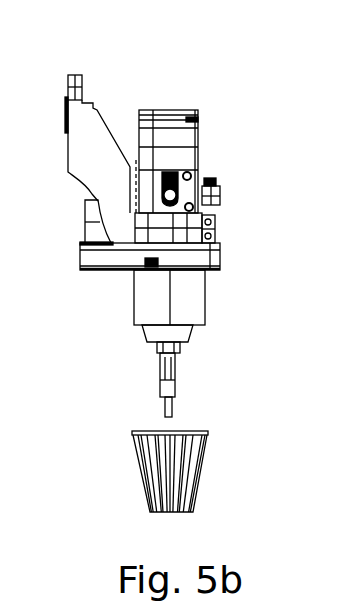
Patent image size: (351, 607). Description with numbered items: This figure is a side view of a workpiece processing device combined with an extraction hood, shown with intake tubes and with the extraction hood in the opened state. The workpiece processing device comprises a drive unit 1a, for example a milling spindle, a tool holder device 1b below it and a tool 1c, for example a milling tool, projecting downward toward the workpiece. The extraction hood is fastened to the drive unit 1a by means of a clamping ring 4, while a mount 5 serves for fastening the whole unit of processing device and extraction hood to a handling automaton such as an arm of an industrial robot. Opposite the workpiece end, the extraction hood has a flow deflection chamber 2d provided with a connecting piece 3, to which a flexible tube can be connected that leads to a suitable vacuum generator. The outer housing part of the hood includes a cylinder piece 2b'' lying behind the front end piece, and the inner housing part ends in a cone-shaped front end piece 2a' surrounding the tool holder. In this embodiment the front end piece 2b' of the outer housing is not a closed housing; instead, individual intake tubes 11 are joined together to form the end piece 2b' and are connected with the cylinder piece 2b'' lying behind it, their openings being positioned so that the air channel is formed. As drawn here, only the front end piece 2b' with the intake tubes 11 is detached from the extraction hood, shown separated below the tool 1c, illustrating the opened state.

The mount 5 is at (88, 103).
The drive unit 1a is at (198, 118).
The connecting piece 3 is at (86, 210).
The clamping ring 4 is at (214, 227).
The flow deflection chamber 2d is at (218, 270).
The cylinder piece 2b'' is at (121, 304).
The cone-shaped front end piece 2a' is at (196, 346).
The tool holder device 1b is at (160, 366).
The tool 1c is at (175, 405).
The front end piece 2b' is at (198, 471).
The intake tubes 11 is at (150, 490).